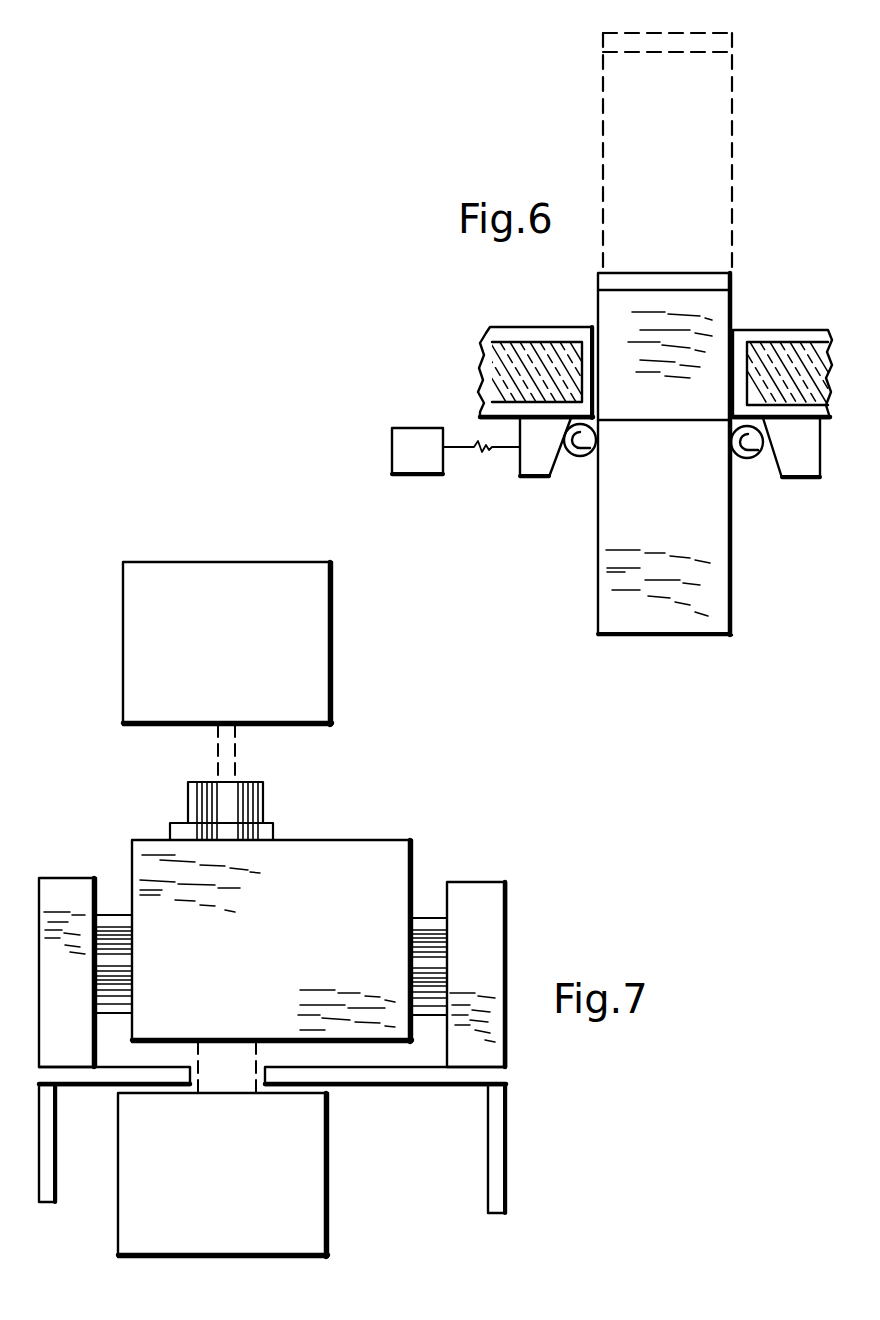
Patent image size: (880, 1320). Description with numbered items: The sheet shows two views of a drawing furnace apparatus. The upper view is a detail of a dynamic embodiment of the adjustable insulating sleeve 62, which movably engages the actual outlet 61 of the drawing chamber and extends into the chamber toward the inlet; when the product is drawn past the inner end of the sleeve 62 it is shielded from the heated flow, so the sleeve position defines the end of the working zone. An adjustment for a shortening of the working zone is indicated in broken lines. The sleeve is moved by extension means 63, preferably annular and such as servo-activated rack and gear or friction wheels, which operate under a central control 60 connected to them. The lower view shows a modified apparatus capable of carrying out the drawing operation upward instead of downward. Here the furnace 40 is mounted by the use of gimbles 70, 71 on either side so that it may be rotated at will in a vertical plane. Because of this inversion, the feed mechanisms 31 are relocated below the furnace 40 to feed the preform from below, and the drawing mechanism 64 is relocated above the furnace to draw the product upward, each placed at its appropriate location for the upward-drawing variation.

In FIG. 7, the feed mechanisms 31 is at (306, 1232).
In FIG. 7, the furnace 40 is at (146, 847).
In FIG. 6, the central control 60 is at (423, 438).
In FIG. 6, the actual outlet 61 is at (597, 364).
In FIG. 6, the insulating sleeve 62 is at (598, 553).
In FIG. 7, the insulating sleeve 62 is at (250, 808).
In FIG. 6, the extension means 63 is at (530, 465).
In FIG. 7, the extension means 63 is at (262, 836).
In FIG. 7, the drawing mechanism 64 is at (318, 696).
In FIG. 7, the gimble 70 is at (96, 908).
In FIG. 7, the gimble 71 is at (446, 905).